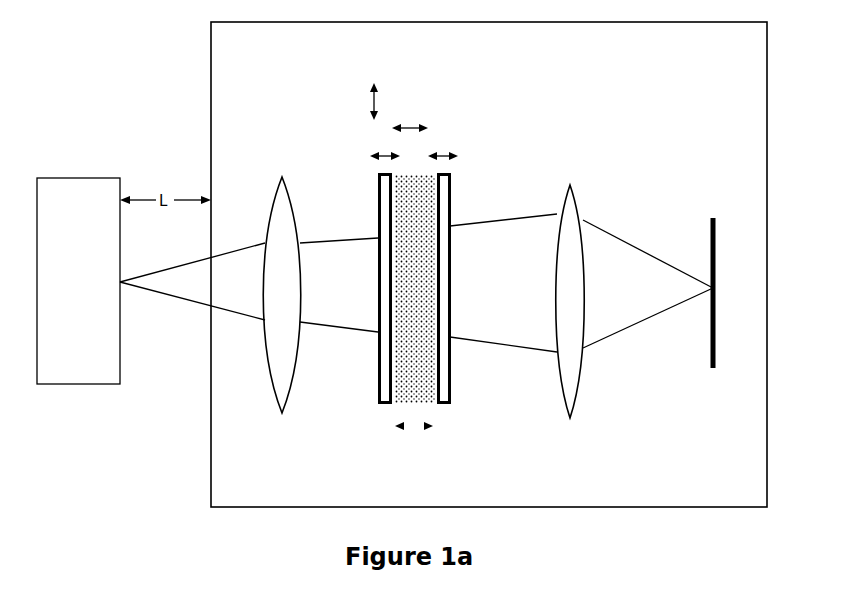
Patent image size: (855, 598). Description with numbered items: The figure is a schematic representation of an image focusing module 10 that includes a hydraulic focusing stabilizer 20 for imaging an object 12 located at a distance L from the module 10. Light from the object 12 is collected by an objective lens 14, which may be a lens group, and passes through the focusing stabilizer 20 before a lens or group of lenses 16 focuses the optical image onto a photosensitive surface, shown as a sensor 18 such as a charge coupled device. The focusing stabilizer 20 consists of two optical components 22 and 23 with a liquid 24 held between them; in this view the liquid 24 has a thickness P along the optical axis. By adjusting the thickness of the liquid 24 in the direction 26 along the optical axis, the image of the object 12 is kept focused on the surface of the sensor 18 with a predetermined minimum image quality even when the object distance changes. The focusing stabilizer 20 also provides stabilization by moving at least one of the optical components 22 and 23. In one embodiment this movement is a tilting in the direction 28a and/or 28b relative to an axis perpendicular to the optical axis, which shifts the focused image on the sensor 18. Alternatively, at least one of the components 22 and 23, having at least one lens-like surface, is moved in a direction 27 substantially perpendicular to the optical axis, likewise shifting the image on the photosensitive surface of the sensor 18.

The image focusing module 10 is at (768, 130).
The object 12 is at (79, 176).
The objective lens 14 is at (282, 180).
The lens 16 is at (570, 186).
The sensor 18 is at (709, 340).
The focusing stabilizer 20 is at (406, 237).
The optical component 22 is at (383, 405).
The optical component 23 is at (450, 404).
The liquid 24 is at (408, 380).
The direction 26 is at (420, 123).
The direction 27 is at (373, 100).
The direction 28a is at (378, 153).
The direction 28b is at (455, 150).